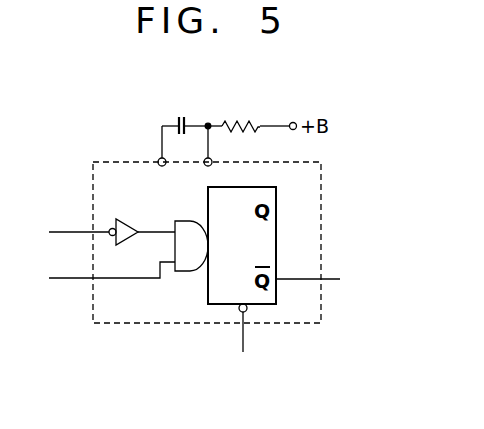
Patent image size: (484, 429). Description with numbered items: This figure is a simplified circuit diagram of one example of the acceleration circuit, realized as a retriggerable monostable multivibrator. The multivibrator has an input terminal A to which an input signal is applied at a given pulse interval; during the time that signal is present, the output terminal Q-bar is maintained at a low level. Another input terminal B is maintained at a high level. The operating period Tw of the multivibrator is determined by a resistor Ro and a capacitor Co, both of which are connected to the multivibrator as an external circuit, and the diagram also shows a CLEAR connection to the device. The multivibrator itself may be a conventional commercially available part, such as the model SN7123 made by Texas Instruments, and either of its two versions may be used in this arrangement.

The capacitor Co is at (182, 115).
The resistor Ro is at (244, 119).
The input terminal A is at (102, 232).
The input terminal B is at (102, 277).
The clear input CLEAR is at (240, 340).